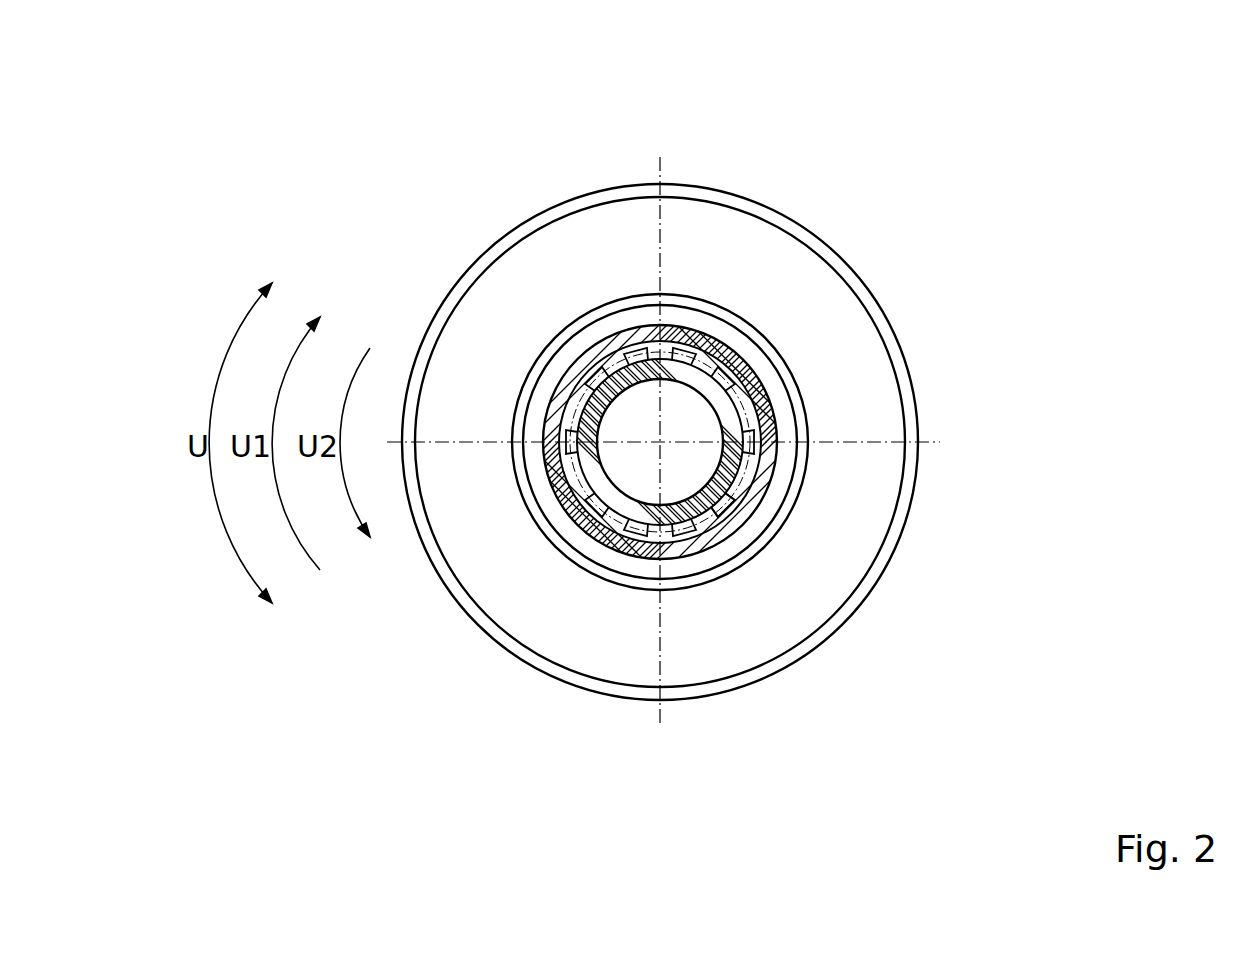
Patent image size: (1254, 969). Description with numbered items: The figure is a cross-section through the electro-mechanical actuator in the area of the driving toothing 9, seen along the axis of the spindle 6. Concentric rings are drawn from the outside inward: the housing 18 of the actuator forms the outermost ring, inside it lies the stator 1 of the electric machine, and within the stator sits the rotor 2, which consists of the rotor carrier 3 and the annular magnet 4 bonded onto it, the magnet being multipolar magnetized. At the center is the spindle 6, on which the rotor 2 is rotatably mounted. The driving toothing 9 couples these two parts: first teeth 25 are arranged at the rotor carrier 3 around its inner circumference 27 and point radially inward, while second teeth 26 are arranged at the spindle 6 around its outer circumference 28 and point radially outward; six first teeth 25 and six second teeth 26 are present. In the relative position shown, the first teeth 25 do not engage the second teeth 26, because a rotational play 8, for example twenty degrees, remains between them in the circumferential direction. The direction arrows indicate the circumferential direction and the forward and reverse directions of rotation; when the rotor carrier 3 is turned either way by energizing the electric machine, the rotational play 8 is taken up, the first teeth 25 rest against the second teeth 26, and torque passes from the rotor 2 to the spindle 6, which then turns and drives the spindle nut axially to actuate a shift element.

The stator 1 is at (557, 287).
The rotor 2 is at (543, 342).
The rotor carrier 3 is at (717, 352).
The annular magnet 4 is at (638, 318).
The spindle 6 is at (745, 385).
The rotational play 8 is at (730, 520).
The driving toothing 9 is at (580, 530).
The housing 18 is at (697, 690).
The first teeth 25 is at (755, 445).
The second teeth 26 is at (750, 480).
The inner circumference 27 is at (743, 365).
The outer circumference 28 is at (637, 527).